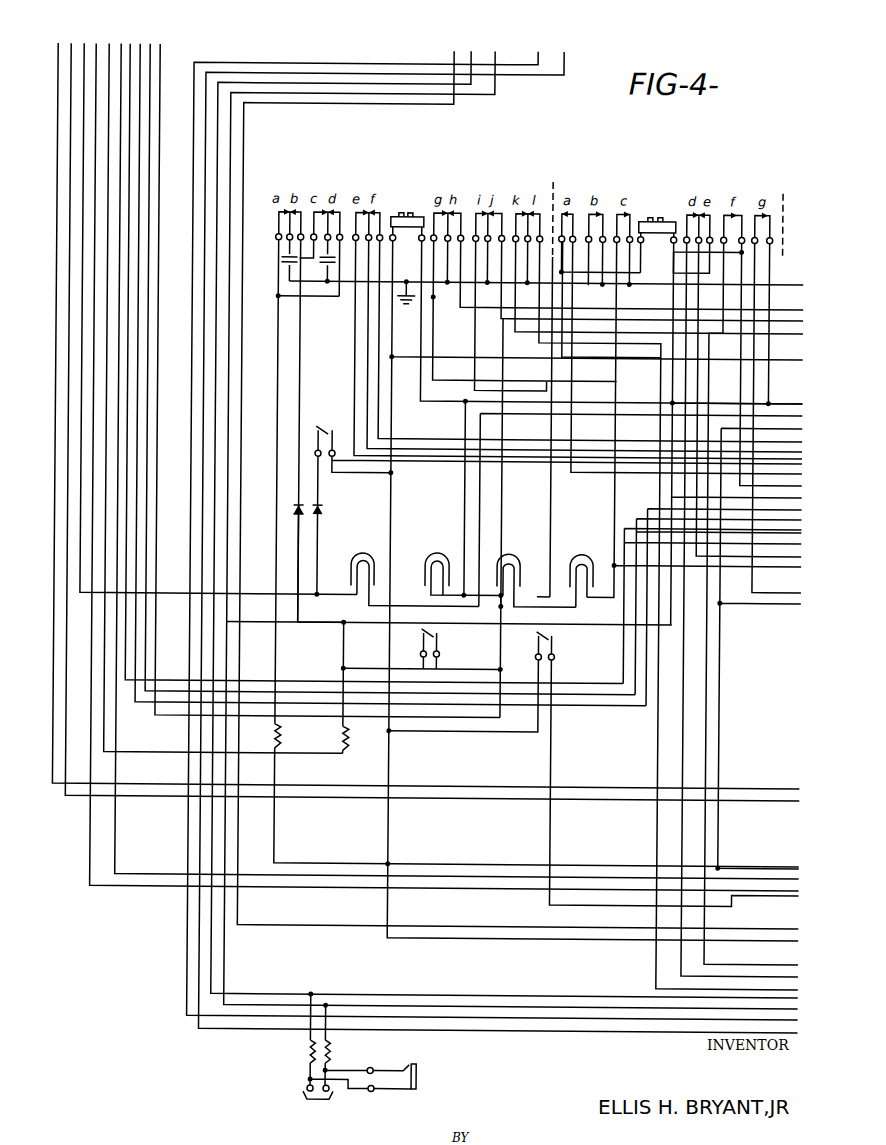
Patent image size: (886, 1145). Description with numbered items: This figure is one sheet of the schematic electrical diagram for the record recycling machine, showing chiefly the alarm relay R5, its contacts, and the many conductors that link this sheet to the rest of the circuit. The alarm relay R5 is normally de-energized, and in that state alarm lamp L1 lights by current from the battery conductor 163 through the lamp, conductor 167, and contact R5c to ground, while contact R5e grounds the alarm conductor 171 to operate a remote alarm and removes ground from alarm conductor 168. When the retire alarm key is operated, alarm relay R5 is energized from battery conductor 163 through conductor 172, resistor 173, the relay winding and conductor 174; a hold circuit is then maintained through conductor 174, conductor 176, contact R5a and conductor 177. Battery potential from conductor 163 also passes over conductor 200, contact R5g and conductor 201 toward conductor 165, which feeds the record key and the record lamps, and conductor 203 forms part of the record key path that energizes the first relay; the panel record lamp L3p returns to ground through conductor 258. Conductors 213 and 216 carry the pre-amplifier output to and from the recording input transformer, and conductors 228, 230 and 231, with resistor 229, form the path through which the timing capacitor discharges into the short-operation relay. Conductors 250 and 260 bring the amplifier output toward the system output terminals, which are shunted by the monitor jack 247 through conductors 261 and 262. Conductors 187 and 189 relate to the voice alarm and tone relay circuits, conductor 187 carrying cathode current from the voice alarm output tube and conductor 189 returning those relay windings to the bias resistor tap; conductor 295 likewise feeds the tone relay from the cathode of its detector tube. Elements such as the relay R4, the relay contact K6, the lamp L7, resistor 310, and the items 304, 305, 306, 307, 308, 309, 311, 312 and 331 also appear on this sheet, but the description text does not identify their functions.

The conductor 213 is at (55, 60).
The conductor 216 is at (72, 50).
The conductor 228 is at (110, 70).
The conductor 203 is at (120, 85).
The conductor 295 is at (130, 103).
The conductor 258 is at (83, 100).
The conductor 187 is at (140, 138).
The conductor 189 is at (150, 163).
The conductor 163 is at (160, 195).
The conductor 261 is at (465, 52).
The conductor 262 is at (494, 55).
The conductor 260 is at (537, 55).
The conductor 250 is at (563, 60).
The capacitor 306 is at (288, 262).
The capacitor 331 is at (328, 270).
The ground 304 is at (395, 280).
The conductor 307 is at (302, 365).
The diodes 308 is at (295, 512).
The conductor 309 is at (318, 548).
The conductor 176 is at (560, 256).
The conductor 174 is at (693, 245).
The resistor 173 is at (676, 260).
The conductor 311 is at (735, 250).
The conductor 305 is at (495, 356).
The conductor 165 is at (478, 372).
The conductor 177 is at (568, 360).
The alarm conductor 171 is at (640, 728).
The conductor 172 is at (710, 610).
The conductor 312 is at (751, 604).
The conductor 200 is at (768, 345).
The conductor 167 is at (614, 508).
The conductor 201 is at (752, 604).
The conductor 230 is at (347, 645).
The conductor 231 is at (457, 625).
The relay contact K6 is at (560, 644).
The resistor 310 is at (284, 733).
The resistor 229 is at (352, 735).
The alarm conductor 168 is at (680, 748).
The monitor jack 247 is at (410, 1080).
The panel record lamp L3p is at (414, 569).
The lamp L7 is at (537, 571).
The alarm lamp L1 is at (582, 570).
The relay R4 is at (407, 214).
The alarm relay R5 is at (657, 217).